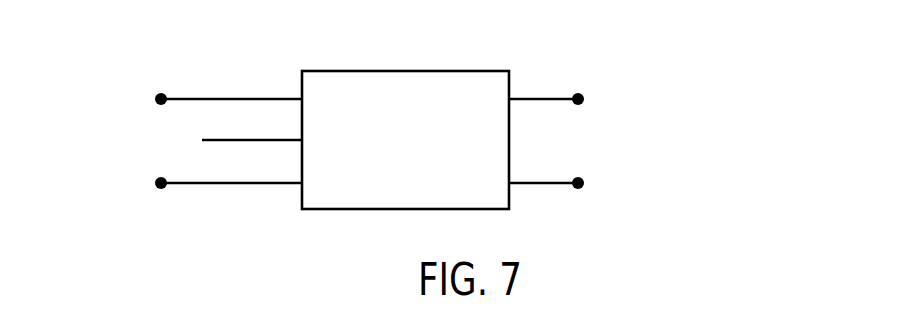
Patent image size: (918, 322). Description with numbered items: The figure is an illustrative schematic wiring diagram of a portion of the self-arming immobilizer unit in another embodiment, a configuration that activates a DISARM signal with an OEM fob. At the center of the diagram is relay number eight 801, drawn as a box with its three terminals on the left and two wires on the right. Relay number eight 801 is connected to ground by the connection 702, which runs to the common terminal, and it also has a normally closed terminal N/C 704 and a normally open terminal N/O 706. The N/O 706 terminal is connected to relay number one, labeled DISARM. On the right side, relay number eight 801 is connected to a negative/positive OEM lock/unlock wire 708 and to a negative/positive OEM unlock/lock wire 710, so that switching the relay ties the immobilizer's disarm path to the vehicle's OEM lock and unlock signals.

The relay no. 8 801 is at (405, 71).
The connection 702 is at (233, 98).
The N/C 704 is at (223, 139).
The N/O 706 is at (229, 185).
The negative/positive OEM lock/unlock wire 708 is at (537, 98).
The negative/positive OEM unlock/lock wire 710 is at (549, 184).